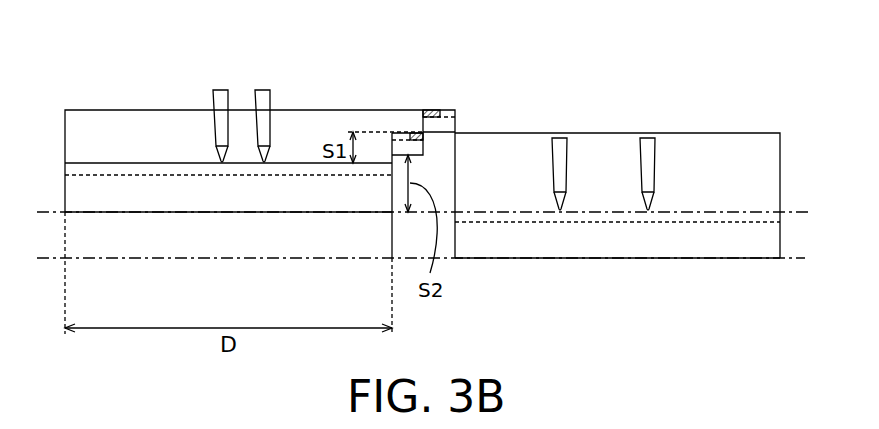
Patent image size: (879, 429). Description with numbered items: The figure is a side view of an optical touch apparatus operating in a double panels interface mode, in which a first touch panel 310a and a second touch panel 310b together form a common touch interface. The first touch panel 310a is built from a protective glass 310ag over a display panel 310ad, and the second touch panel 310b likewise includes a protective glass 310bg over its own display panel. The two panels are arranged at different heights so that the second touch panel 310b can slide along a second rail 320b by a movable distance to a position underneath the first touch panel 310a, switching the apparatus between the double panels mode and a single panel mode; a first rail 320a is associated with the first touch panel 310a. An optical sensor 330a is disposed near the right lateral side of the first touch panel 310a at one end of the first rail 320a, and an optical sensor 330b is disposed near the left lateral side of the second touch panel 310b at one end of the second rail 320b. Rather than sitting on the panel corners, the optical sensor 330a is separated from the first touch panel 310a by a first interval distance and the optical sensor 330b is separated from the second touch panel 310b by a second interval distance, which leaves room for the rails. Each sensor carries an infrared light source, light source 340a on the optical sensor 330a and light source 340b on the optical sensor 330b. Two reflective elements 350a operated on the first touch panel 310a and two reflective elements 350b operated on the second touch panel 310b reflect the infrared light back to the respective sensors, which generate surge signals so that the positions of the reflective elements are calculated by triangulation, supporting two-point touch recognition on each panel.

The first touch panel 310a is at (193, 53).
The protective glass 310ag is at (98, 165).
The display panel 310ad is at (188, 190).
The reflective element 350a is at (258, 92).
The optical sensor 330a is at (447, 123).
The light source 340a is at (428, 110).
The optical sensor 330b is at (392, 150).
The light source 340b is at (415, 133).
The first rail 320a is at (230, 212).
The second rail 320b is at (268, 258).
The second touch panel 310b is at (805, 300).
The protective glass 310bg is at (683, 215).
The reflective element 350b is at (648, 211).